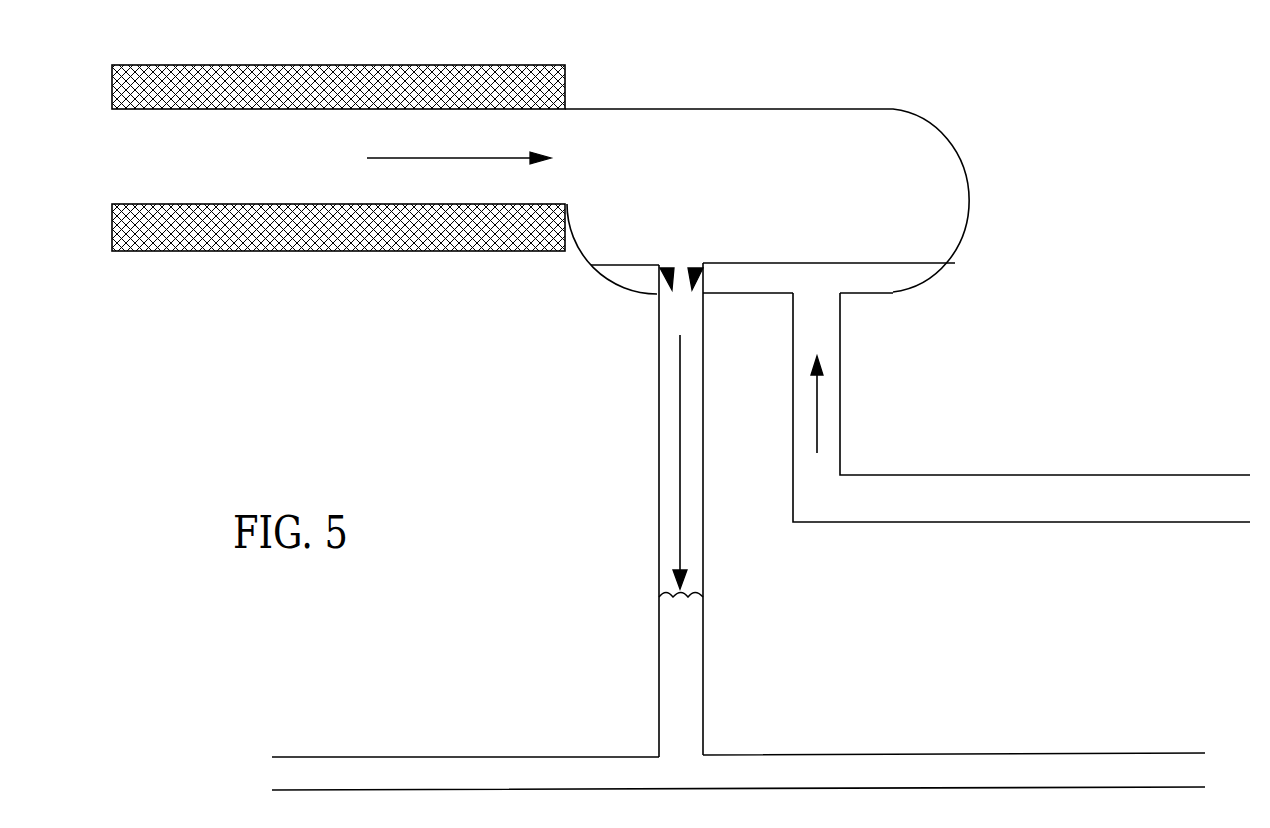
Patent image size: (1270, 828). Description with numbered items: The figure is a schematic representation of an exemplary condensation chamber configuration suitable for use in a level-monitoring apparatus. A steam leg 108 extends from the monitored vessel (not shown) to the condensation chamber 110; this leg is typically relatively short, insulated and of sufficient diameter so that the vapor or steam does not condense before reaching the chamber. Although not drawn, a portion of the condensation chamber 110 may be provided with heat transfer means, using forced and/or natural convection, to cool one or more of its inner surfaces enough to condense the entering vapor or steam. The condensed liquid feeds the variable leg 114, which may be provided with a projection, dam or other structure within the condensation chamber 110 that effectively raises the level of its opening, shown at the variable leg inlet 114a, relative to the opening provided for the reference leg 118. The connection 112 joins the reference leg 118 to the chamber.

The steam leg 108 is at (353, 175).
The condensation chamber 110 is at (875, 128).
The reference leg connection to condensing chamber 112 is at (895, 280).
The variable leg 114 is at (659, 717).
The variable leg inlet 114a is at (657, 282).
The reference leg 118 is at (840, 392).